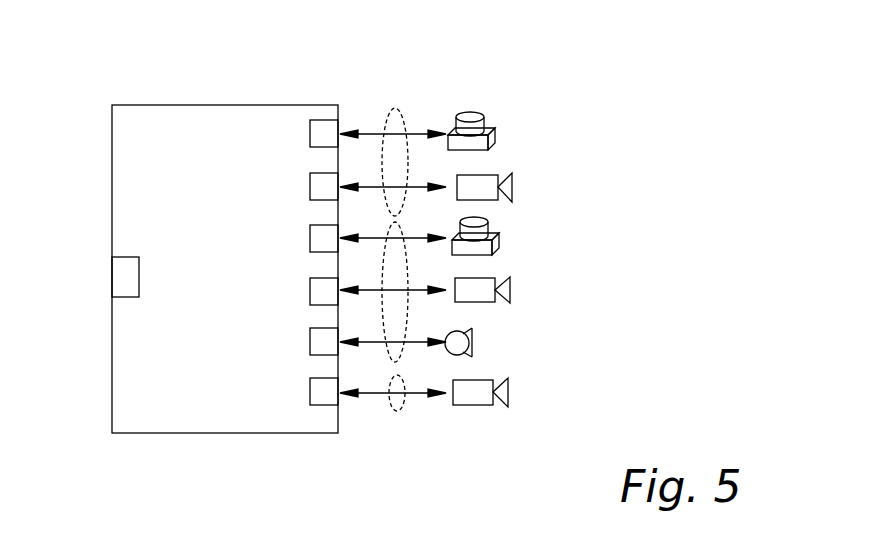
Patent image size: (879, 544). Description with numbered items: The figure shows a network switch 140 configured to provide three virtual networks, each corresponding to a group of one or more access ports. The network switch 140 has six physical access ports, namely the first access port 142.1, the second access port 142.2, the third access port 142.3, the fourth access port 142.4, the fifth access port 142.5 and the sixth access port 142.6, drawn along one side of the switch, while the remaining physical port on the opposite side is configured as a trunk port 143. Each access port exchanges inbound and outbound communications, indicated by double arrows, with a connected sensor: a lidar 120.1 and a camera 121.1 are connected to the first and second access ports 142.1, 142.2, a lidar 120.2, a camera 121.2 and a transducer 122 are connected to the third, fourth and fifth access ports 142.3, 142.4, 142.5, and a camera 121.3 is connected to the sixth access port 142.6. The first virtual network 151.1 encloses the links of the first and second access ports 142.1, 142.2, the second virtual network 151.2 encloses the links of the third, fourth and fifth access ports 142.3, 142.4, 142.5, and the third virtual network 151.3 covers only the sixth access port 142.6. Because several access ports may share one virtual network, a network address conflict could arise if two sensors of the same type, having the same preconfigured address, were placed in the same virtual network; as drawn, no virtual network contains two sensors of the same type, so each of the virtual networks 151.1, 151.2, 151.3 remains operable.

The network switch 140 is at (195, 433).
The trunk port 143 is at (125, 300).
The first access port 142.1 is at (310, 128).
The second access port 142.2 is at (310, 181).
The third access port 142.3 is at (310, 233).
The fourth access port 142.4 is at (310, 286).
The fifth access port 142.5 is at (310, 336).
The sixth access port 142.6 is at (310, 386).
The first virtual network 151.1 is at (395, 108).
The second virtual network 151.2 is at (408, 307).
The third virtual network 151.3 is at (390, 407).
The lidar 120.1 is at (485, 116).
The lidar 120.2 is at (490, 221).
The camera 121.1 is at (517, 182).
The camera 121.2 is at (512, 280).
The camera 121.3 is at (472, 405).
The transducer 122 is at (475, 333).